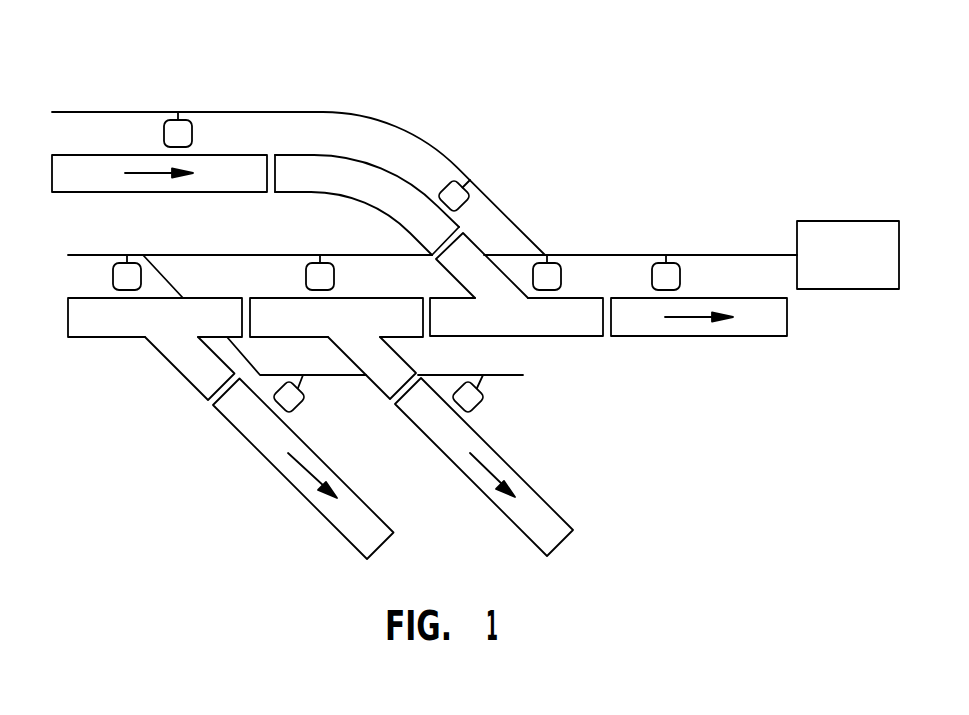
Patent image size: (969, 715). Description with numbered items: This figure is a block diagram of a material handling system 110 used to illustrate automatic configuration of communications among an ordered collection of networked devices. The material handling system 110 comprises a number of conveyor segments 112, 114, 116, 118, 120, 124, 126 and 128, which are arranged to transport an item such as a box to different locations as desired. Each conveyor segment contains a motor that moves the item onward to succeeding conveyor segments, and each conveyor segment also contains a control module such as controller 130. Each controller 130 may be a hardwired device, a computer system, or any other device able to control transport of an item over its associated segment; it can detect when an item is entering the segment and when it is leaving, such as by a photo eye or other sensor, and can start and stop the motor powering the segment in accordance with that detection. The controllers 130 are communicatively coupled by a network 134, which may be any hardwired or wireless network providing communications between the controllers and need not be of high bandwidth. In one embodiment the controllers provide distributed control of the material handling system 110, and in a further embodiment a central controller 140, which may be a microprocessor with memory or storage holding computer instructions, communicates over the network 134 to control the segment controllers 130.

The material handling system 110 is at (588, 80).
The conveyor segment 112 is at (82, 193).
The conveyor segment 114 is at (93, 338).
The conveyor segment 116 is at (720, 337).
The conveyor segment 118 is at (378, 167).
The conveyor segment 120 is at (563, 337).
The conveyor segment 124 is at (407, 337).
The conveyor segment 126 is at (473, 482).
The conveyor segment 128 is at (290, 482).
The controller 130 is at (193, 133).
The network 134 is at (395, 127).
The central controller 140 is at (866, 272).